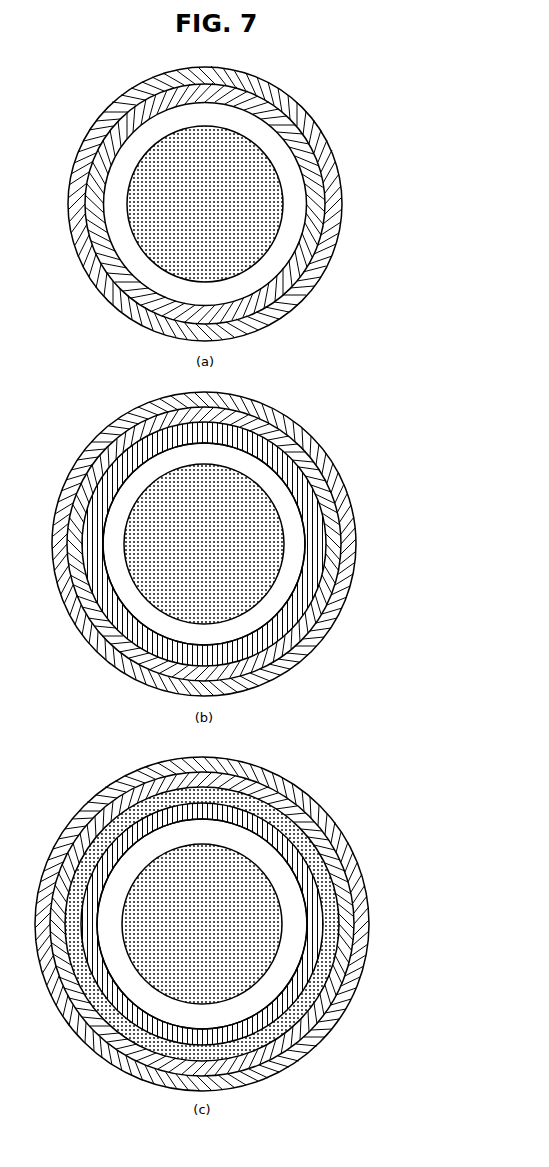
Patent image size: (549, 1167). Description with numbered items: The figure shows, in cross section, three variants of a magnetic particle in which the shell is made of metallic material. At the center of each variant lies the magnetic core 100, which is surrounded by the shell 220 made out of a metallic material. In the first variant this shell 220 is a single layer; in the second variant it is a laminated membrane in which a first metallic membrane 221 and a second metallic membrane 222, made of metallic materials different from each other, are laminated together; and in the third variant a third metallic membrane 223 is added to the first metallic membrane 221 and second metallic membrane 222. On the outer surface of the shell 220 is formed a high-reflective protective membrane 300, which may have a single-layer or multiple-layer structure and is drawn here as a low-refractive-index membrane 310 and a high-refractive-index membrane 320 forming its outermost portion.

The magnetic core 100 is at (268, 161).
The shell made out of a metallic material 220 is at (299, 183).
The first metallic membrane 221 is at (293, 522).
The second metallic membrane 222 is at (320, 534).
The third metallic membrane 223 is at (332, 945).
The high-reflective protective membrane 300 is at (406, 195).
The low-refractive-index membrane 310 is at (336, 198).
The high-refractive-index membrane 320 is at (336, 228).